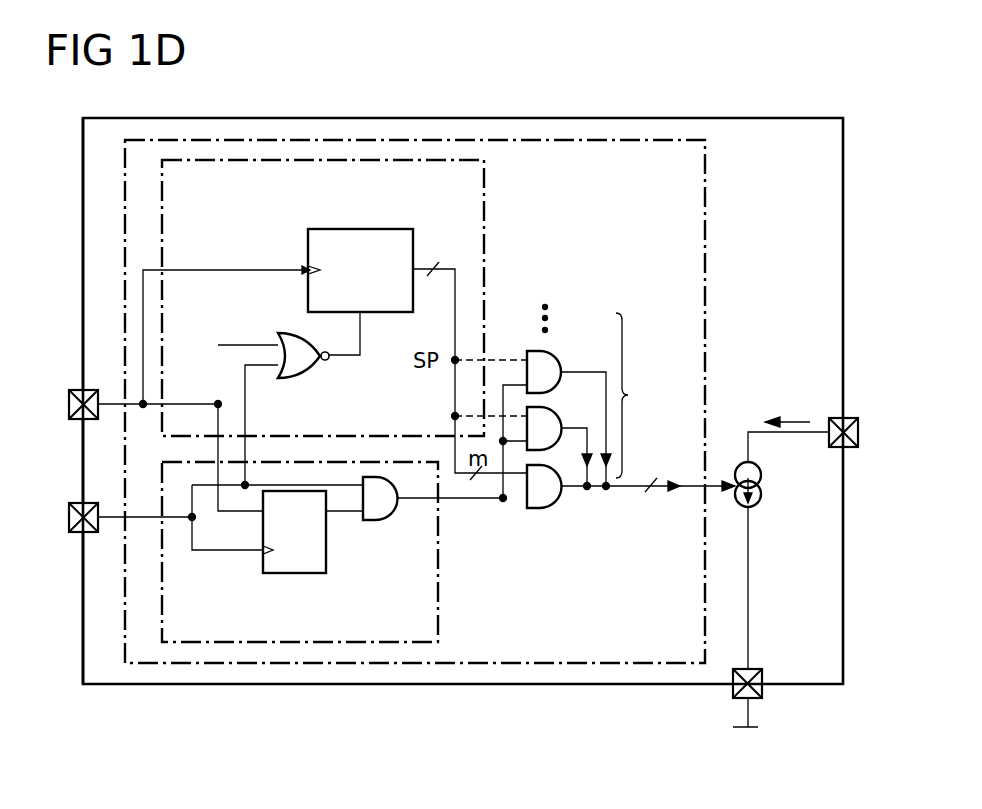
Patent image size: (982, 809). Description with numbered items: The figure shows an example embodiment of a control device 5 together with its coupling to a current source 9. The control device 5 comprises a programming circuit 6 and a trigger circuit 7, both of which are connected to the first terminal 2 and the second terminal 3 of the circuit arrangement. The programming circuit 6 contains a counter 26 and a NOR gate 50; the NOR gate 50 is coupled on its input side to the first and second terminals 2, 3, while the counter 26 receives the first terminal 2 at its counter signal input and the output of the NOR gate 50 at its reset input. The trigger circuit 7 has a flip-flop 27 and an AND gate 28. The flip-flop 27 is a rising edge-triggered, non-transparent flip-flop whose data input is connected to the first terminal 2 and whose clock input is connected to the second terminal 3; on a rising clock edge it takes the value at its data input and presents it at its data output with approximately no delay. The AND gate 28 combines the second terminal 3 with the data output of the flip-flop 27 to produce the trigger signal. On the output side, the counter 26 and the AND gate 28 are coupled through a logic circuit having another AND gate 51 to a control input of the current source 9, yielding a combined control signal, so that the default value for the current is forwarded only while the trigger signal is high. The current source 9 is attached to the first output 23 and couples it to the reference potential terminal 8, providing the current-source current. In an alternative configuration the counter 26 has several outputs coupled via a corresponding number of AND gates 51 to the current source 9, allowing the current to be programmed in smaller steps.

The first terminal 2 is at (76, 390).
The second terminal 3 is at (76, 503).
The control device 5 is at (705, 285).
The programming circuit 6 is at (484, 240).
The trigger circuit 7 is at (438, 587).
The reference potential terminal 8 is at (750, 730).
The current source 9 is at (765, 494).
The first output 23 is at (850, 415).
The counter 26 is at (362, 229).
The flip-flop 27 is at (293, 573).
The AND gate 28 is at (380, 520).
The NOR gate 50 is at (310, 372).
The additional AND gate 51 is at (555, 508).